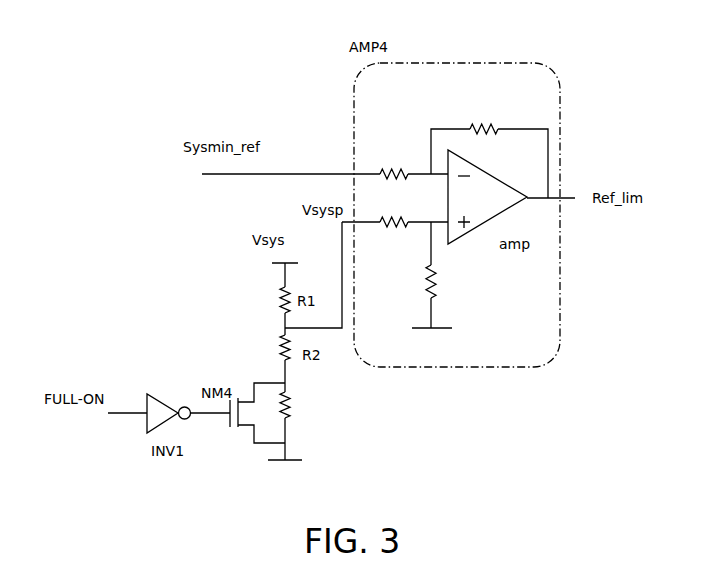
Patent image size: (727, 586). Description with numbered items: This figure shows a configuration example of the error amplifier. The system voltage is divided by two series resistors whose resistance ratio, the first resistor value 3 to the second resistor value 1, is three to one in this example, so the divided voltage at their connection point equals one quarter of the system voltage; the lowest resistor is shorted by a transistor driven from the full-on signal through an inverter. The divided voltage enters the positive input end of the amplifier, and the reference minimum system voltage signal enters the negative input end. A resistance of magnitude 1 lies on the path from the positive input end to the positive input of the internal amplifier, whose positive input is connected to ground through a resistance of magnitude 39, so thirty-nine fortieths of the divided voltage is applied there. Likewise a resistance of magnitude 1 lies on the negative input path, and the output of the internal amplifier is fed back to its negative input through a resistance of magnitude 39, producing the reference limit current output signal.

The resistance having a magnitude of "1" 1 is at (325, 251).
The resistance ratio value of resistor R1 3 is at (266, 299).
The resistance having a magnitude of "39" 39 is at (462, 196).